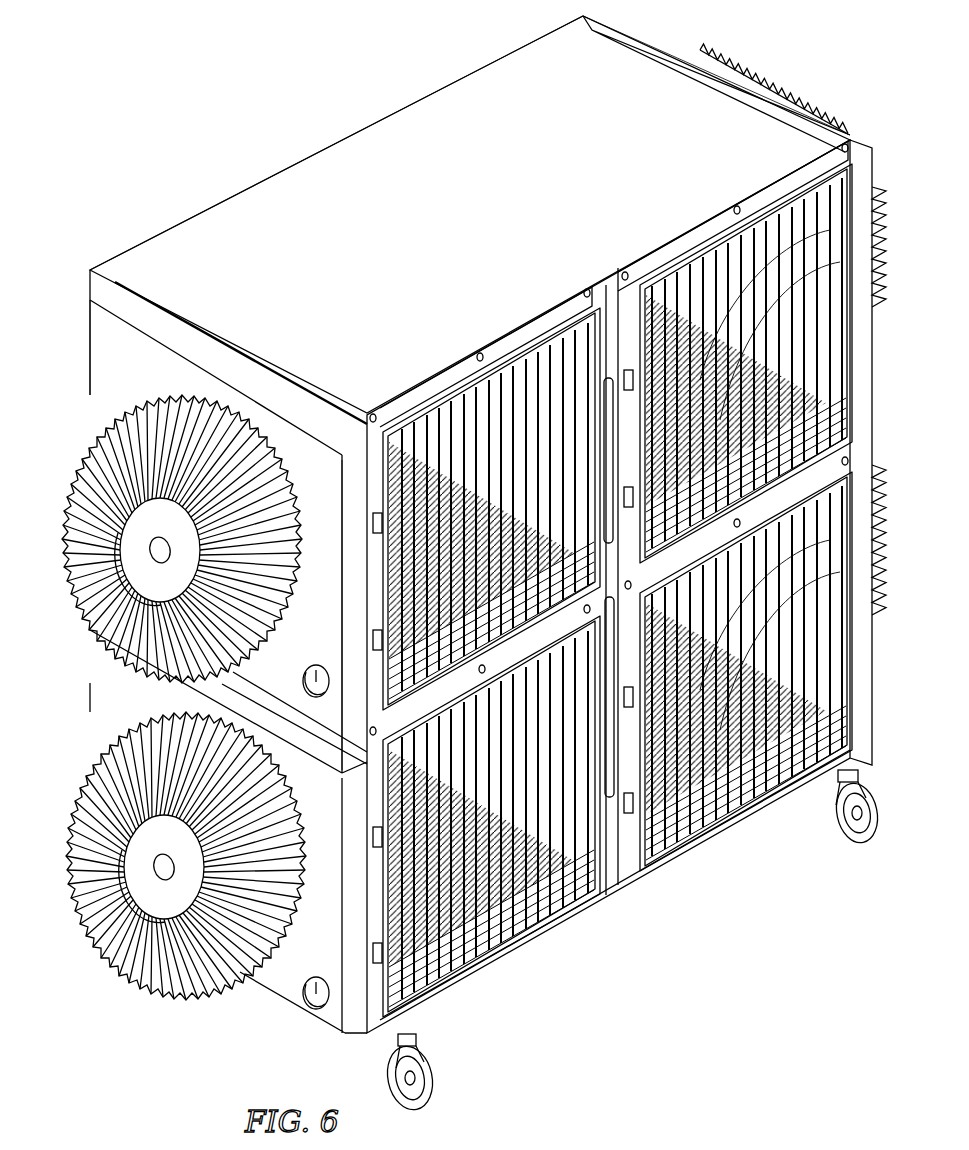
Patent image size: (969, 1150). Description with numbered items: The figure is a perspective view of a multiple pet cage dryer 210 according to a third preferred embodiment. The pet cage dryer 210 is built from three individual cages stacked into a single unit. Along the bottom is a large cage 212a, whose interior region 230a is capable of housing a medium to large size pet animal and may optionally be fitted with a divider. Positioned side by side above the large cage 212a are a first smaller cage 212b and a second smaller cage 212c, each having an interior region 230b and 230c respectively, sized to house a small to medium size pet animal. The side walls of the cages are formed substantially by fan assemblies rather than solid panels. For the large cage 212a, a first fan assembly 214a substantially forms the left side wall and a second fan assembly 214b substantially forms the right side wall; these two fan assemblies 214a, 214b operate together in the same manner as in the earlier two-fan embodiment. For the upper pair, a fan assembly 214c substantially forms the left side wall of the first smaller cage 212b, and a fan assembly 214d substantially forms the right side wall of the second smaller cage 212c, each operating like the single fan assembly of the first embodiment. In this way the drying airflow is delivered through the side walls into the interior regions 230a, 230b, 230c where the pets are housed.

The pet cage dryer 210 is at (340, 80).
The large cage 212a is at (613, 910).
The first smaller cage 212b is at (245, 225).
The second smaller cage 212c is at (512, 80).
The first fan assembly 214a is at (122, 938).
The second fan assembly 214b is at (890, 530).
The fan assembly 214c is at (60, 500).
The fan assembly 214d is at (783, 70).
The interior region 230a is at (813, 672).
The interior region 230b is at (492, 405).
The interior region 230c is at (715, 240).